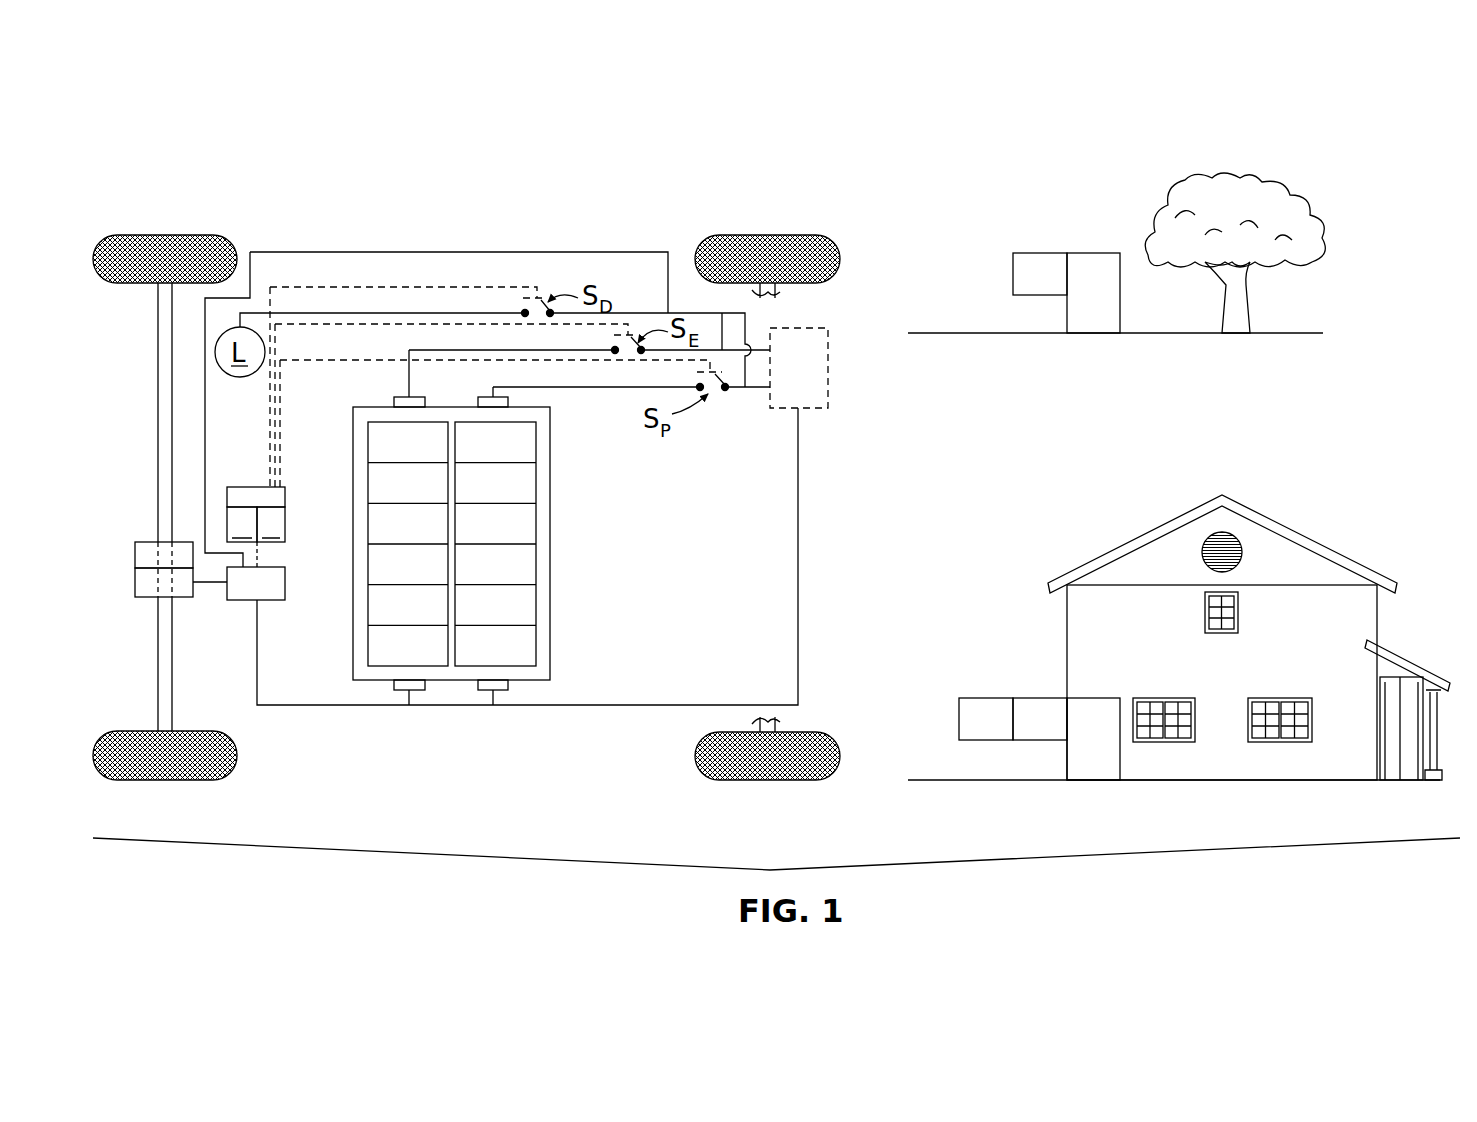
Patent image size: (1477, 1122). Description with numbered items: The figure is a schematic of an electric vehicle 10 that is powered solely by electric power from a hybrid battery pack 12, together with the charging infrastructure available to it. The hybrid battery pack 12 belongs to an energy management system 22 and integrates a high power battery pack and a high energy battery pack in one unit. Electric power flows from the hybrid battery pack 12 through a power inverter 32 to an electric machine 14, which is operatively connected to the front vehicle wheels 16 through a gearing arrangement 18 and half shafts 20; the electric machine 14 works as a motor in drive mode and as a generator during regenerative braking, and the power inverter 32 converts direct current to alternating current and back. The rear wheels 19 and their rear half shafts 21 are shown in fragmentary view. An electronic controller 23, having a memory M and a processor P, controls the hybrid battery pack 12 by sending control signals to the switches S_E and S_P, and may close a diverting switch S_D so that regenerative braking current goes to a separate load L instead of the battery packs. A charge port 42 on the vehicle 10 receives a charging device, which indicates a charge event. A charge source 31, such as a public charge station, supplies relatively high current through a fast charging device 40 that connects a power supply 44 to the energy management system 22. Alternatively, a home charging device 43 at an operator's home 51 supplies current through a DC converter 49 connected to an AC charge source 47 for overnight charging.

The electric vehicle 10 is at (356, 216).
The hybrid battery pack 12 is at (551, 592).
The electric machine 14 is at (152, 597).
The front vehicle wheels 16 is at (140, 236).
The gearing arrangement 18 is at (152, 542).
The rear wheels 19 is at (745, 236).
The half shafts 20 is at (158, 368).
The rear half shafts 21 is at (782, 292).
The energy management system 22 is at (596, 486).
The electronic controller 23 is at (286, 503).
The charge source 31 is at (1250, 138).
The power inverter 32 is at (272, 598).
The fast charging device 40 is at (1055, 288).
The charge port 42 is at (829, 380).
The home charging device 43 is at (1000, 734).
The power supply 44 is at (1108, 307).
The AC charge source 47 is at (1108, 749).
The DC converter 49 is at (1054, 734).
The home 51 is at (1320, 486).